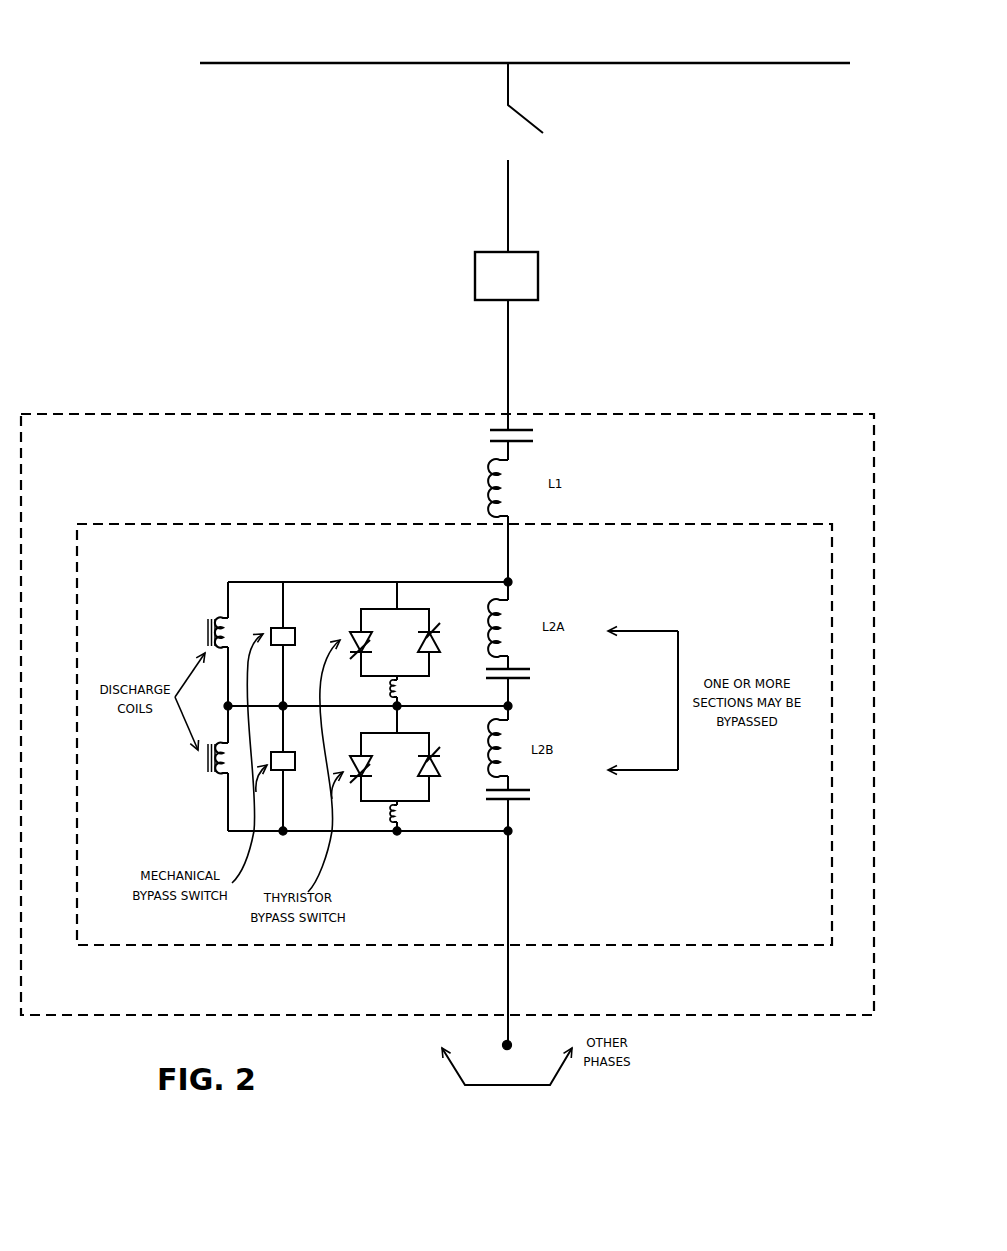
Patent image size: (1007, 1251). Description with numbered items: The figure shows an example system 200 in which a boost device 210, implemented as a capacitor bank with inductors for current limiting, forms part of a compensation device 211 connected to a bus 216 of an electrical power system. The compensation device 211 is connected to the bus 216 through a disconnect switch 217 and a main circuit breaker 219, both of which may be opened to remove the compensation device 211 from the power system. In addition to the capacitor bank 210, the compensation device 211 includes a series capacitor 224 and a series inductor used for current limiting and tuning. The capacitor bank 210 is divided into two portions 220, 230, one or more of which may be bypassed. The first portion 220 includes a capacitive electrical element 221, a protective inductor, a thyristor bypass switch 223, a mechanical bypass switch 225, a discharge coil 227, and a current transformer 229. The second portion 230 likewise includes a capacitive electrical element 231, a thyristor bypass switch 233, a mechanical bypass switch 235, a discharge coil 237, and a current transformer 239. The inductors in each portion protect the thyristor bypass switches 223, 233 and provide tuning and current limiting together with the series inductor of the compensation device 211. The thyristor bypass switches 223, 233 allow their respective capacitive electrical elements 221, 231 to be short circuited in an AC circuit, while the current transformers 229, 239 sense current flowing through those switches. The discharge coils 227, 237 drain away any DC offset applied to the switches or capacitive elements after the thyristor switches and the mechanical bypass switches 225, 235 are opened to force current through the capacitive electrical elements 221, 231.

The system 200 is at (161, 16).
The bus 216 is at (525, 48).
The disconnect switch 217 is at (591, 157).
The main circuit breaker 219 is at (583, 341).
The compensation device 211 is at (192, 414).
The boost device 210 is at (268, 524).
The capacitor 224 is at (531, 442).
The capacitive electrical element 221 is at (527, 687).
The capacitive electrical element 231 is at (526, 915).
The portion 220 is at (643, 622).
The portion 230 is at (643, 761).
The mechanical bypass switch 225 is at (293, 629).
The mechanical bypass switch 235 is at (292, 754).
The discharge coil 227 is at (201, 632).
The discharge coil 237 is at (201, 758).
The thyristor bypass switch 223 is at (395, 642).
The thyristor bypass switch 233 is at (395, 767).
The current transformer 229 is at (408, 691).
The current transformer 239 is at (408, 816).